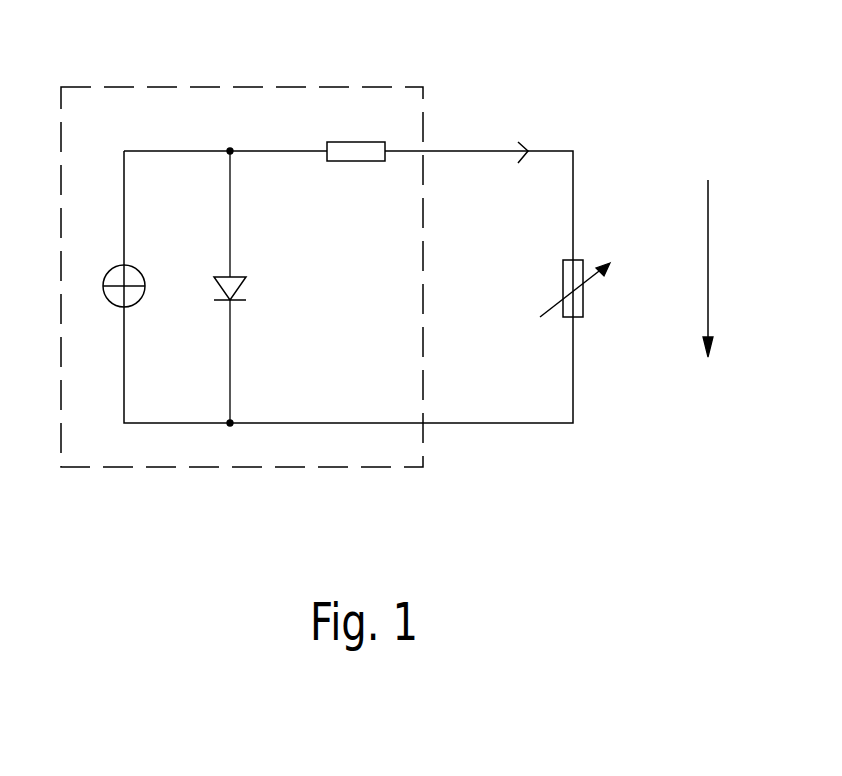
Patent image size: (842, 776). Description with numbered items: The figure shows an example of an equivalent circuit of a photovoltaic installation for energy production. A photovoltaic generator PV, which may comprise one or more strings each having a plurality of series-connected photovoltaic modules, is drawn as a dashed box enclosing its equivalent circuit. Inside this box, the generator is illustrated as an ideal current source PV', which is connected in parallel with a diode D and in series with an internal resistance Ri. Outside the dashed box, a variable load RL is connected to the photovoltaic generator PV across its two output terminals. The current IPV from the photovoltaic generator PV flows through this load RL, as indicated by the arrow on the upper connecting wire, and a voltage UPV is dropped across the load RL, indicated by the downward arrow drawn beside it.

The photovoltaic generator PV is at (242, 233).
The ideal current source PV' is at (146, 255).
The diode D is at (240, 277).
The internal resistance Ri is at (373, 161).
The current IPV is at (521, 128).
The variable load RL is at (582, 260).
The voltage UPV is at (732, 268).